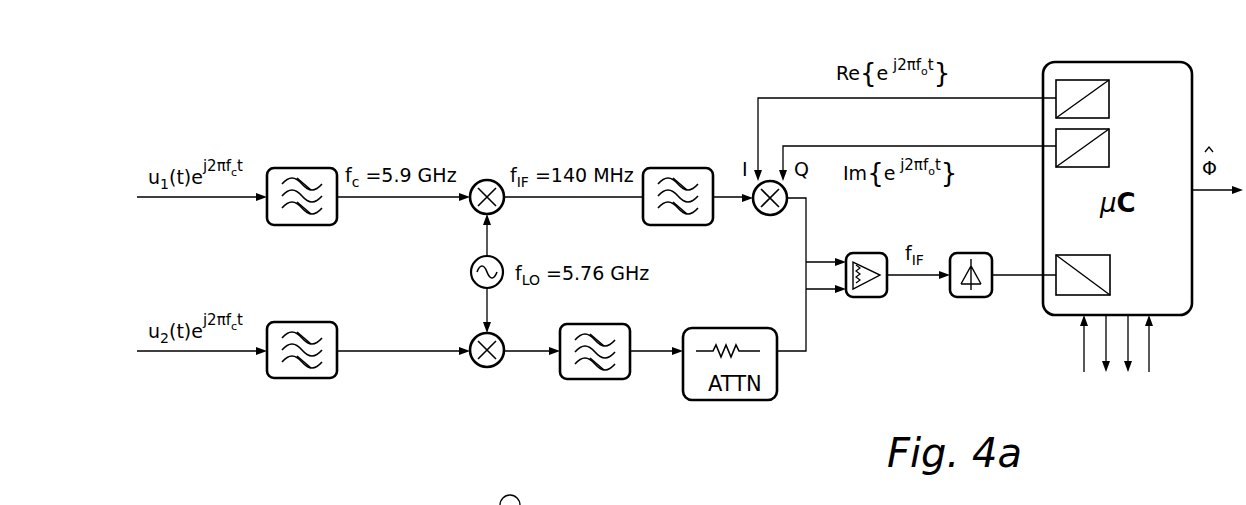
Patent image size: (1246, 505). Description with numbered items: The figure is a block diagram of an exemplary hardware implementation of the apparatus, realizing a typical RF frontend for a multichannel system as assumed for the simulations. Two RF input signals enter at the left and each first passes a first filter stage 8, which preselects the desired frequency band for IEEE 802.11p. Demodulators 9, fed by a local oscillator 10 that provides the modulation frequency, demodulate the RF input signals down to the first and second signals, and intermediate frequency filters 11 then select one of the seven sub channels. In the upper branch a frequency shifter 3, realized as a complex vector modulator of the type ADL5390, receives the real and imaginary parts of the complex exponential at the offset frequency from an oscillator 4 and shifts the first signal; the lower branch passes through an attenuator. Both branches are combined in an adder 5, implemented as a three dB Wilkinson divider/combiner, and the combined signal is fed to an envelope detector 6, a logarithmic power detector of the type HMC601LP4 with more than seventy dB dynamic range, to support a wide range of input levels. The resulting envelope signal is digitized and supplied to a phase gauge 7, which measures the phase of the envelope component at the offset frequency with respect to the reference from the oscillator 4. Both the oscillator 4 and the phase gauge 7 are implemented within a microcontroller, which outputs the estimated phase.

The frequency shifter 3 is at (771, 212).
The oscillator 4 is at (1095, 78).
The adder 5 is at (860, 294).
The envelope detector 6 is at (962, 297).
The phase gauge 7 is at (1068, 297).
The first filter stage 8 is at (320, 178).
The demodulators 9 is at (487, 180).
The local oscillator 10 is at (472, 281).
The intermediate frequency filters 11 is at (700, 180).